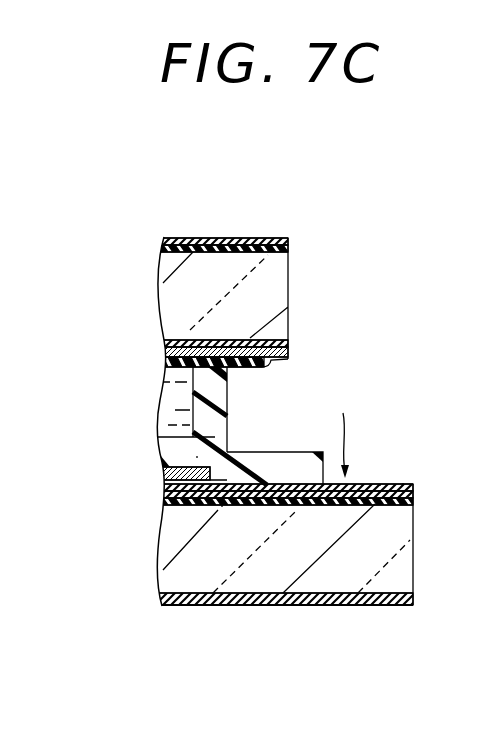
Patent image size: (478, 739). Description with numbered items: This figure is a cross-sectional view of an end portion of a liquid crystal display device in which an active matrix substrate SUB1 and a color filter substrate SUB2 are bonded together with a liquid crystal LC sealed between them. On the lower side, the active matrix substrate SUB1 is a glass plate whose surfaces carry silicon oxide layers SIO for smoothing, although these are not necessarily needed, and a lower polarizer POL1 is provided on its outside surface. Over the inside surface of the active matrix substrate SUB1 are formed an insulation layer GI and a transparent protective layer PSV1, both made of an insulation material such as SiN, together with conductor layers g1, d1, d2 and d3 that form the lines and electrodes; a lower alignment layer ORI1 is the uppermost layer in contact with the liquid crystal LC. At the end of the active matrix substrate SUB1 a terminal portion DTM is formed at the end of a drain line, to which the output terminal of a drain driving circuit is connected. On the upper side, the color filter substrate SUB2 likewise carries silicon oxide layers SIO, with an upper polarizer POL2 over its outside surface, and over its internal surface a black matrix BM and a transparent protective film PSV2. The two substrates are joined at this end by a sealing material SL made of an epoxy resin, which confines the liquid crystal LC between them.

The upper polarizer POL2 is at (166, 236).
The silicon oxide layer SIO is at (163, 249).
The color filter substrate SUB2 is at (177, 278).
The black matrix BM is at (167, 347).
The transparent protective film PSV2 is at (167, 360).
The liquid crystal LC is at (170, 403).
The sealing material SL is at (208, 410).
The lower alignment layer ORI1 is at (180, 450).
The transparent protective layer PSV1 is at (163, 455).
The insulation layer GI is at (163, 485).
The active matrix substrate SUB1 is at (193, 558).
The lower polarizer POL1 is at (178, 606).
The terminal portion DTM is at (378, 408).
The conductor layer d1 is at (380, 485).
The conductor layer d2 is at (222, 506).
The conductor layer d3 is at (198, 457).
The conductor layer g1 is at (403, 482).